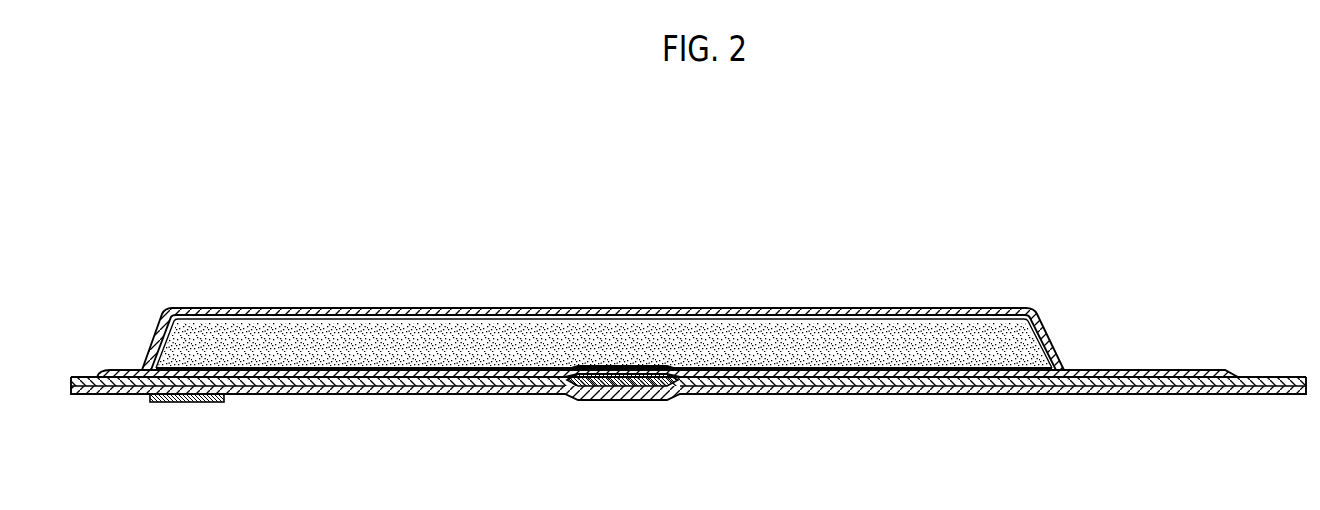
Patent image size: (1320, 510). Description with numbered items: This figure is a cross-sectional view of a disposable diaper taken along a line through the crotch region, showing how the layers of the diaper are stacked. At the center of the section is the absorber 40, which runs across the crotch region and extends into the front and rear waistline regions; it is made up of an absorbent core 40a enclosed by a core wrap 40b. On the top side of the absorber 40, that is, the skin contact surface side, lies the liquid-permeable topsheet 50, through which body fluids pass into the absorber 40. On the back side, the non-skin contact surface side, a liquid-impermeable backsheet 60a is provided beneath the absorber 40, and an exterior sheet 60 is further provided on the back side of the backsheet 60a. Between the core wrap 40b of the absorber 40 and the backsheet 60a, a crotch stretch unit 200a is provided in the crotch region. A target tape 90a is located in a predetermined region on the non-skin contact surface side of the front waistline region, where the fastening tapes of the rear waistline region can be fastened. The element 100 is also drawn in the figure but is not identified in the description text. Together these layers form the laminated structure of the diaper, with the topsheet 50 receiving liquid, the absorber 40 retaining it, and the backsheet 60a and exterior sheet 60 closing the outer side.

The absorber 40 is at (656, 317).
The absorbent core 40a is at (1043, 340).
The core wrap 40b is at (1050, 322).
The topsheet 50 is at (1030, 308).
The exterior sheet 60 is at (128, 395).
The backsheet 60a is at (262, 395).
The target tape 90a is at (178, 403).
The base plate 100 is at (1118, 395).
The crotch stretch unit 200a is at (625, 401).